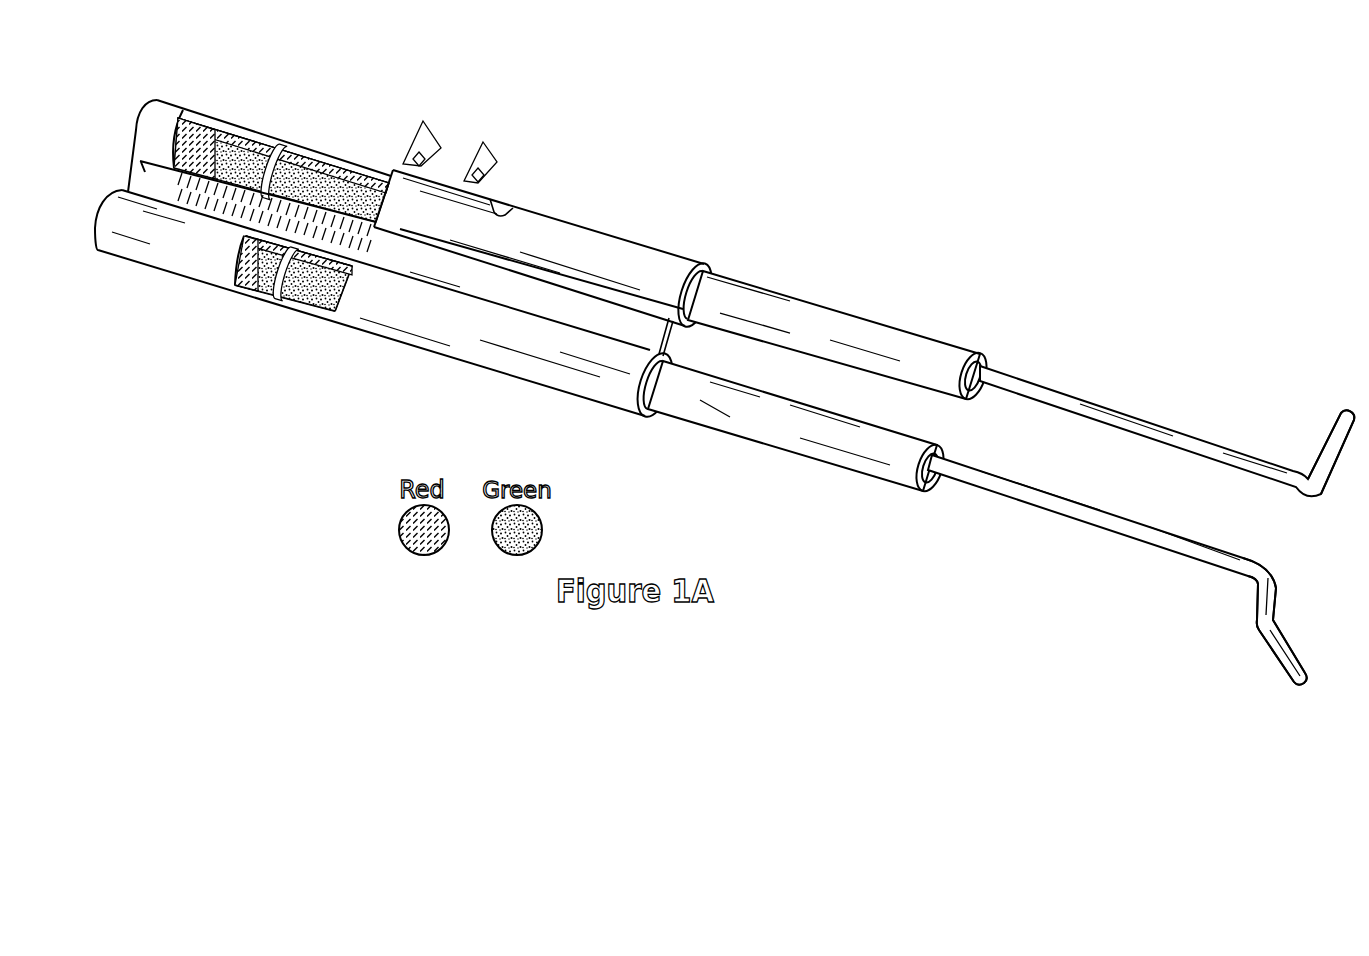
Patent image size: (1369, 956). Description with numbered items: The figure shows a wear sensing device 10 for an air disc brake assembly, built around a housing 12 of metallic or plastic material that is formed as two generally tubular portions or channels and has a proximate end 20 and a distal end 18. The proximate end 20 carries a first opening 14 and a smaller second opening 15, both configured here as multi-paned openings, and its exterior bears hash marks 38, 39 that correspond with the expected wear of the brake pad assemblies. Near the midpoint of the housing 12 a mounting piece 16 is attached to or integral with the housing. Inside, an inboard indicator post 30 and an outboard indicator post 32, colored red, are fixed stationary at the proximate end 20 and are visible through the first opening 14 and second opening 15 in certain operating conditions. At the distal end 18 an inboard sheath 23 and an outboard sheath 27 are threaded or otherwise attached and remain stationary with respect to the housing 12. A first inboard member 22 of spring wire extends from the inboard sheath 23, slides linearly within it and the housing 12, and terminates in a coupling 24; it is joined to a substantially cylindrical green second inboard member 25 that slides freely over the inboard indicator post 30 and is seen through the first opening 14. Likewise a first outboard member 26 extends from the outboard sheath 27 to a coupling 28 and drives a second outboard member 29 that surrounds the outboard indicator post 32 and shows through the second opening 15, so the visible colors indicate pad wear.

The wear sensing device 10 is at (366, 430).
The housing 12 is at (500, 357).
The first opening 14 is at (322, 158).
The second opening 15 is at (303, 310).
The mounting piece 16 is at (503, 196).
The distal end 18 is at (690, 240).
The proximate end 20 is at (126, 282).
The first inboard member 22 is at (1136, 414).
The inboard sheath 23 is at (825, 306).
The coupling 24 is at (1323, 448).
The second inboard member 25 is at (363, 172).
The first outboard member 26 is at (1105, 528).
The outboard sheath 27 is at (755, 443).
The coupling 28 is at (1258, 630).
The second outboard member 29 is at (277, 298).
The inboard indicator post 30 is at (206, 140).
The outboard indicator post 32 is at (237, 287).
The hash marks 38 is at (143, 165).
The hash marks 39 is at (263, 233).